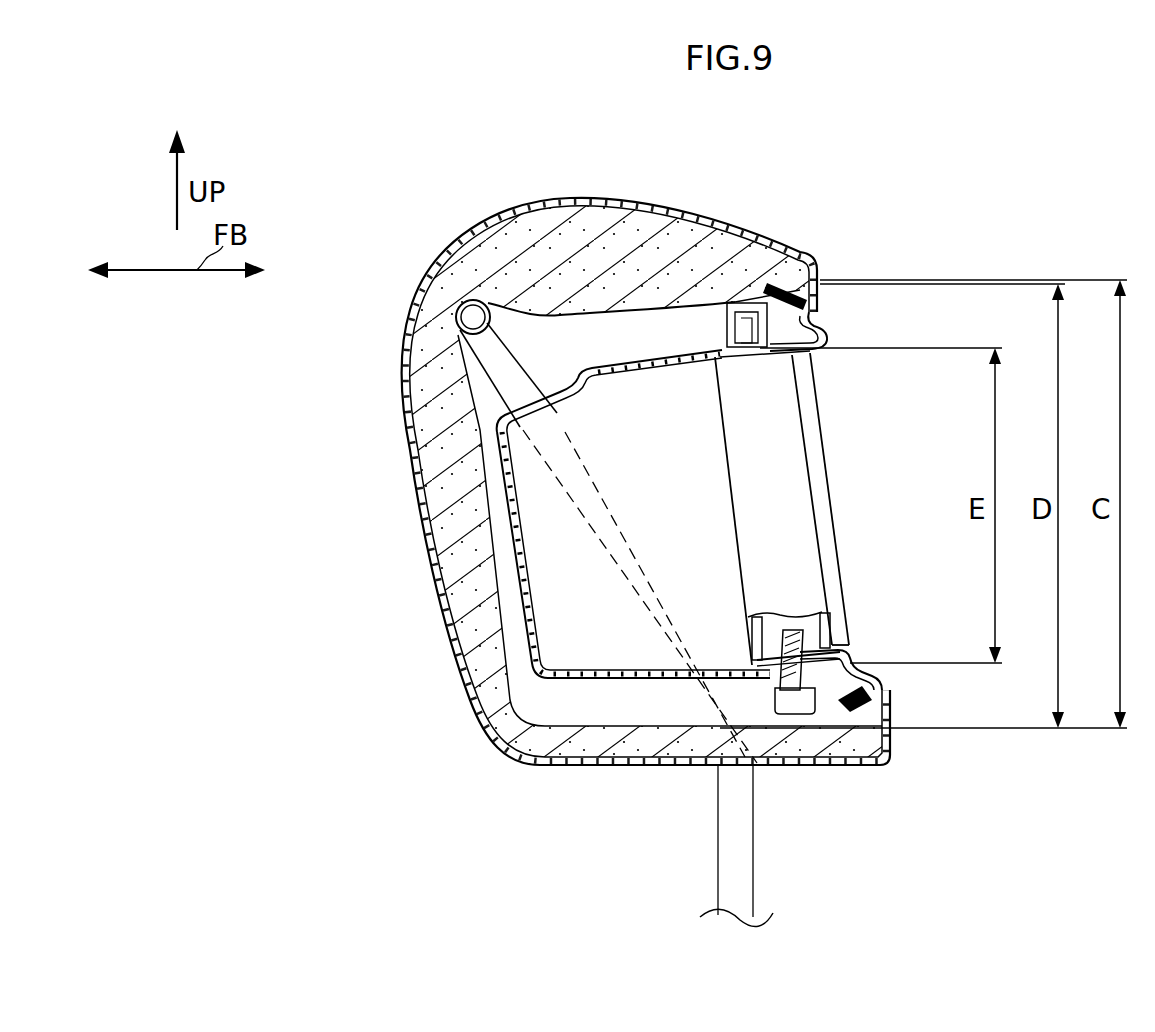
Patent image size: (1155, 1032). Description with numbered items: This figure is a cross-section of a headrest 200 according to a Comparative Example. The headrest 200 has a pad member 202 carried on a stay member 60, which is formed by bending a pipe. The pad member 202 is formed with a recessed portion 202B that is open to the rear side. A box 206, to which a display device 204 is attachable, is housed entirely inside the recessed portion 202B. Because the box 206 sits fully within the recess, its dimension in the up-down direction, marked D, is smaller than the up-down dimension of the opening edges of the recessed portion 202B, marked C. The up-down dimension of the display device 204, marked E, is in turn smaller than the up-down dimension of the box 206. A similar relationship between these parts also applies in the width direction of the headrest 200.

The headrest 200 is at (828, 172).
The pad member 202 is at (650, 208).
The recessed portion 202B is at (590, 333).
The display device 204 is at (830, 478).
The box 206 is at (580, 688).
The stay member 60 is at (753, 845).